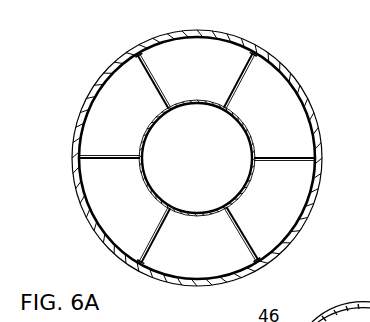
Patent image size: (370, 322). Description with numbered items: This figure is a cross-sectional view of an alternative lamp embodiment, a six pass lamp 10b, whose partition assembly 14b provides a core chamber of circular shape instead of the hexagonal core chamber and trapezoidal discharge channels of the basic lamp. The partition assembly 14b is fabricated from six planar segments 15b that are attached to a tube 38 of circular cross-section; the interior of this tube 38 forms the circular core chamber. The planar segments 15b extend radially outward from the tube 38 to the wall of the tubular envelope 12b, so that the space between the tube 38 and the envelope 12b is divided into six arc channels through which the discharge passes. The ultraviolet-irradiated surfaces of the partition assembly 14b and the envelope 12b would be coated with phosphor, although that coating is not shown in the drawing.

The six pass lamp 10b is at (81, 58).
The tubular envelope 12b is at (307, 111).
The partition assembly 14b is at (280, 145).
The planar segments 15b is at (157, 81).
The tube 38 is at (236, 193).